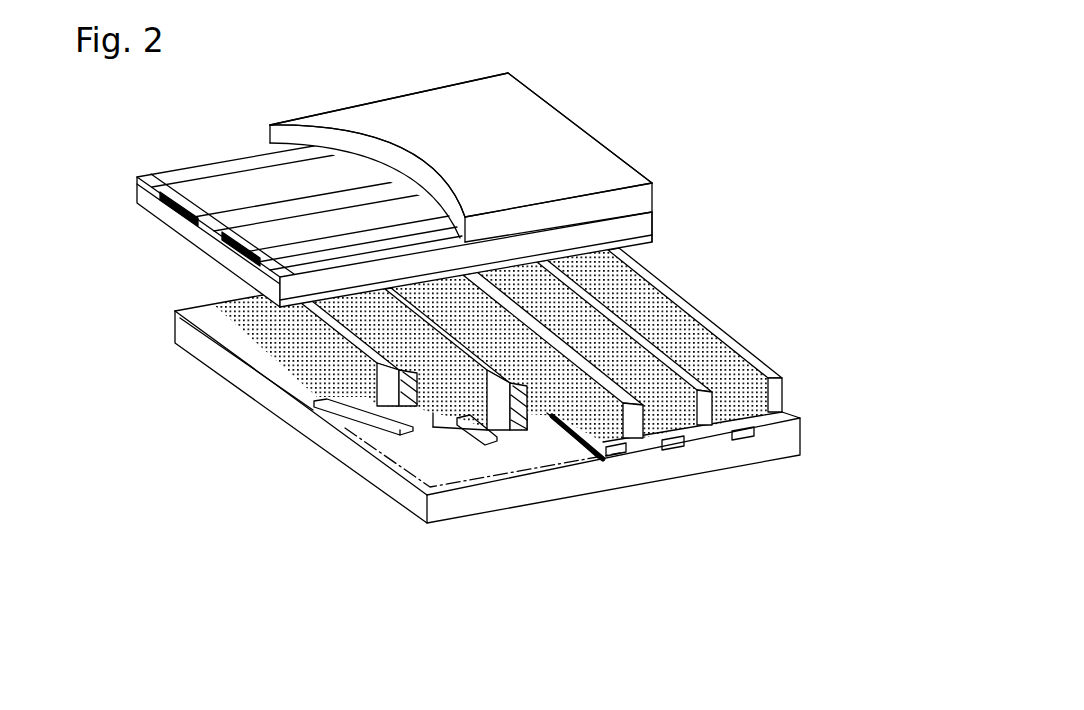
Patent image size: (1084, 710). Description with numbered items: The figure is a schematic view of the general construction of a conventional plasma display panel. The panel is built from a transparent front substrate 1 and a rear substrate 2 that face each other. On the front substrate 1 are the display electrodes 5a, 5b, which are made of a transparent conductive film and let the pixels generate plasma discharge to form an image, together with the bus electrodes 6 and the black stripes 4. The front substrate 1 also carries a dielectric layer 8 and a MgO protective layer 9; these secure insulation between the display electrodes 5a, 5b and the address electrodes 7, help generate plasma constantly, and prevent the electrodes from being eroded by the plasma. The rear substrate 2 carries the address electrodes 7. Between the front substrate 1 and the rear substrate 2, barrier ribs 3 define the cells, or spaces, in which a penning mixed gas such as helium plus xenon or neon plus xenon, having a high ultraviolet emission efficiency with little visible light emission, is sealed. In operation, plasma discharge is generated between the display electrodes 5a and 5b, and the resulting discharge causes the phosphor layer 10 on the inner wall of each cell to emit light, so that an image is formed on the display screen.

The front substrate 1 is at (282, 138).
The rear substrate 2 is at (447, 508).
The barrier rib 3 is at (528, 430).
The black stripe 4 is at (138, 178).
The display electrode 5a is at (205, 252).
The display electrode 5b is at (145, 190).
The bus electrode 6 is at (148, 208).
The address electrode 7 is at (368, 412).
The dielectric layer 8 is at (190, 224).
The MgO protective layer 9 is at (210, 228).
The phosphor layer 10 is at (616, 456).